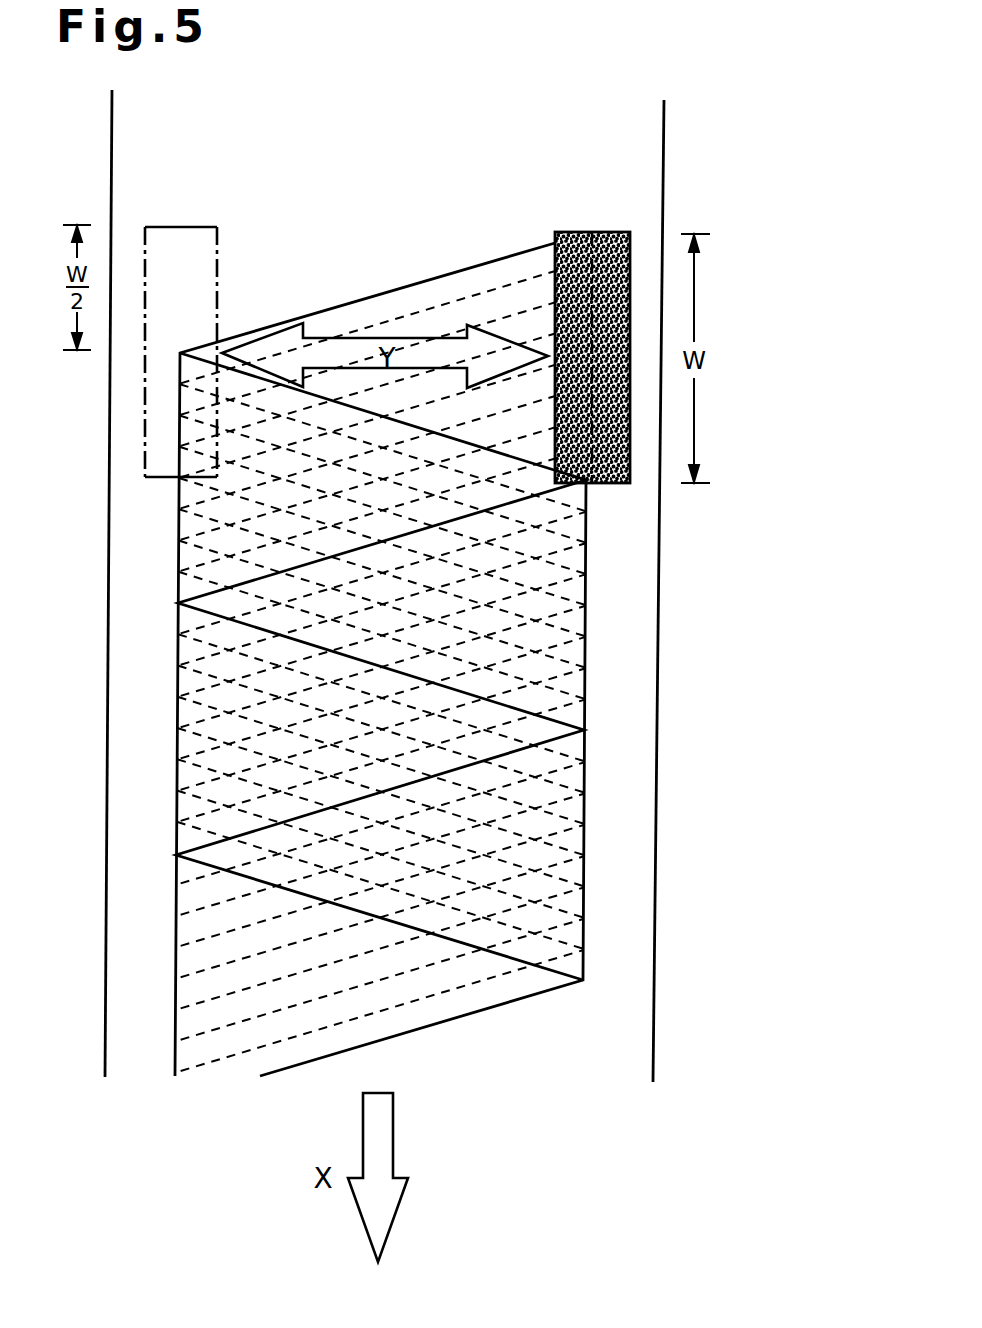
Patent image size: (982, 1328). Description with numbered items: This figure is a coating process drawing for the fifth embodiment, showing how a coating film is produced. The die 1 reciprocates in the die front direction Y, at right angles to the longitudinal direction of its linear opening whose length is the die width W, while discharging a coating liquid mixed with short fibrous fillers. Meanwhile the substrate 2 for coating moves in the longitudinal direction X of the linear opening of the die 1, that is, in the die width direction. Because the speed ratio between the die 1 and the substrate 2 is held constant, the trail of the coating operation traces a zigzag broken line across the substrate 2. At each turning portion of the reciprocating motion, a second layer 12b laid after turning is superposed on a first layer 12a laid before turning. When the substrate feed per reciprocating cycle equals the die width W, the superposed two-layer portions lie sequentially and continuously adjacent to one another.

The die 1 is at (608, 484).
The substrate for coating 2 is at (643, 624).
The first layer 12a is at (540, 980).
The second layer 12b is at (542, 948).